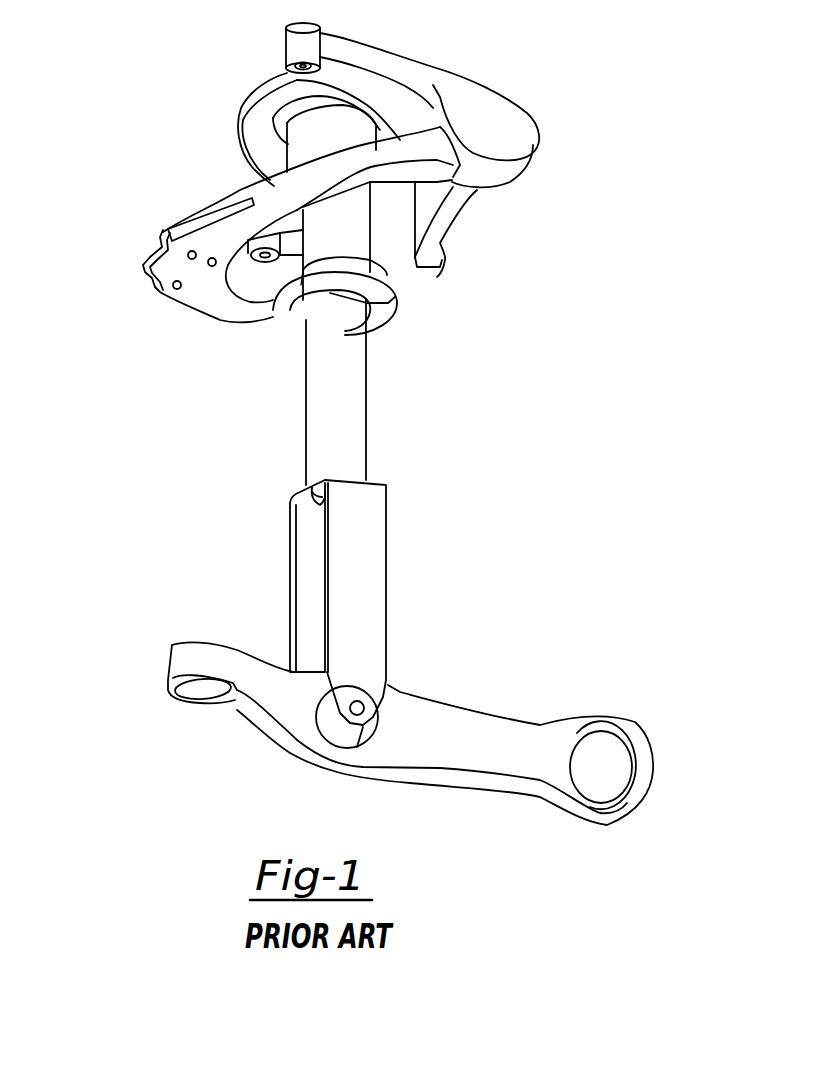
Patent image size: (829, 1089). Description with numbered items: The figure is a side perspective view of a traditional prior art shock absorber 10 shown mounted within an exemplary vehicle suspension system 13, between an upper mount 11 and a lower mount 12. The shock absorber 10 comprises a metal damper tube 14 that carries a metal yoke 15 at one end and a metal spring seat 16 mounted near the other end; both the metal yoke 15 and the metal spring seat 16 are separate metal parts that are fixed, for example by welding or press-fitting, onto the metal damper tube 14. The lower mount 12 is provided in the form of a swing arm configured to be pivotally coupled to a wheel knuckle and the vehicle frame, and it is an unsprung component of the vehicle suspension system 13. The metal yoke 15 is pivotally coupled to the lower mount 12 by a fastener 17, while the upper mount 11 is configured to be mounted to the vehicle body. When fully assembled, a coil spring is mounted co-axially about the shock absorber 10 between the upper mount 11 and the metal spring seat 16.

The shock absorber 10 is at (391, 430).
The upper mount 11 is at (463, 92).
The lower mount 12 is at (513, 733).
The vehicle suspension system 13 is at (147, 121).
The metal damper tube 14 is at (318, 407).
The metal yoke 15 is at (370, 560).
The metal spring seat 16 is at (333, 268).
The fastener 17 is at (364, 709).